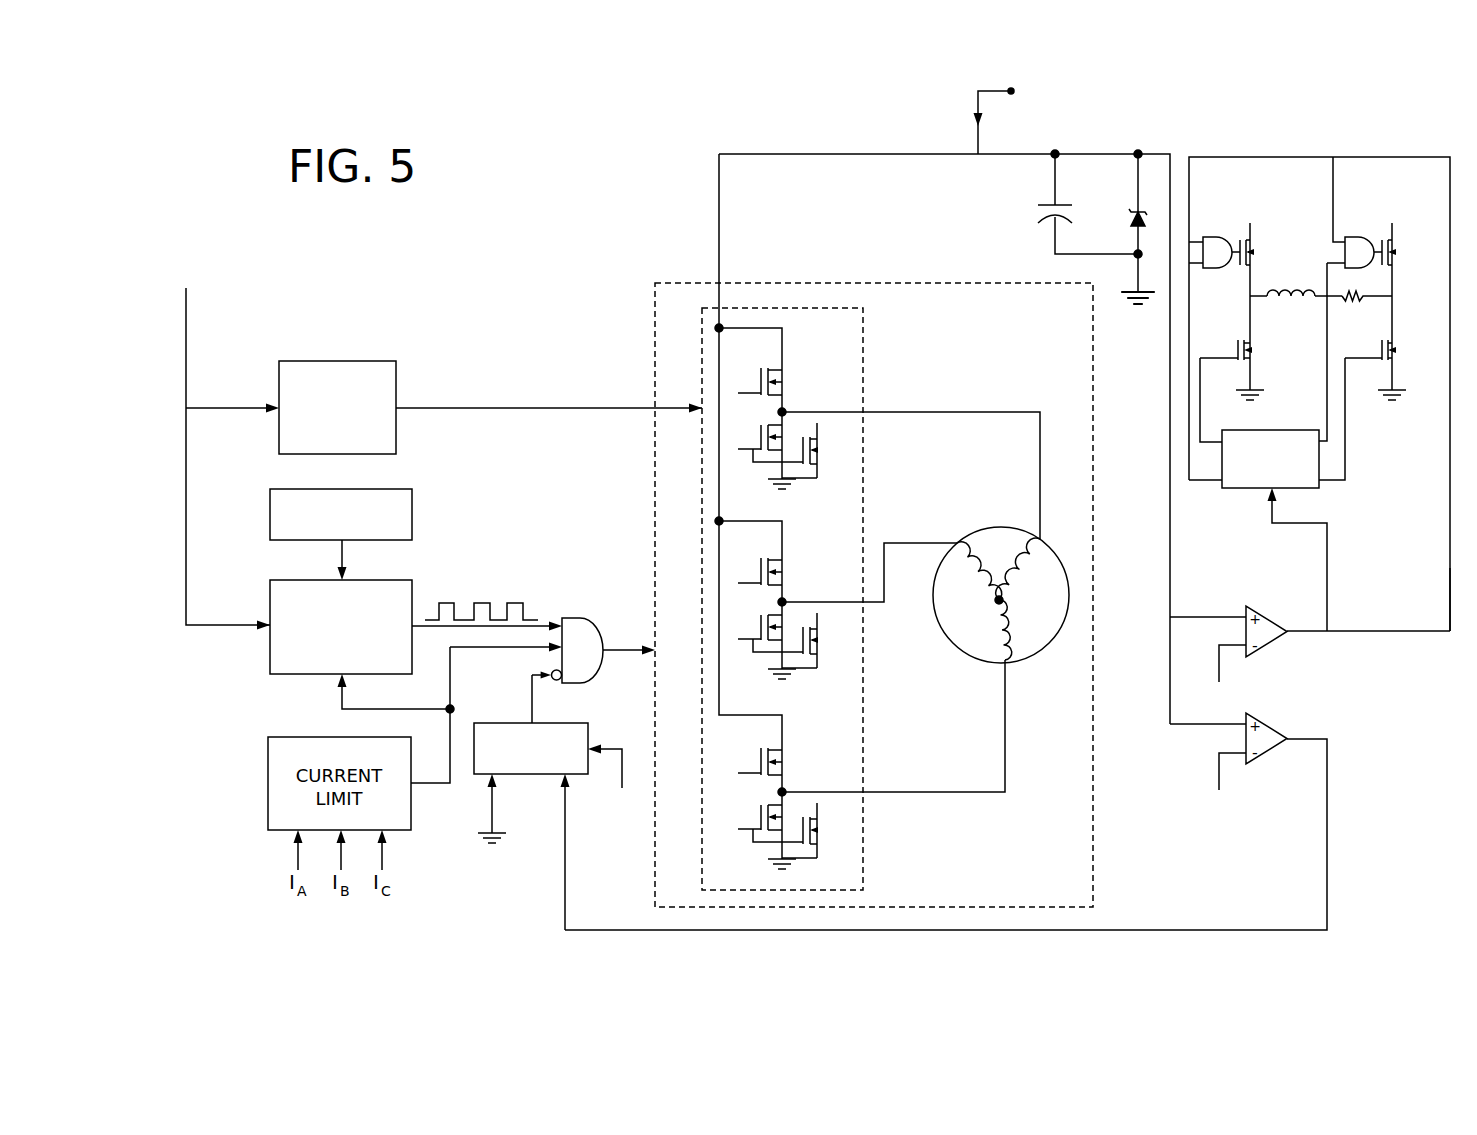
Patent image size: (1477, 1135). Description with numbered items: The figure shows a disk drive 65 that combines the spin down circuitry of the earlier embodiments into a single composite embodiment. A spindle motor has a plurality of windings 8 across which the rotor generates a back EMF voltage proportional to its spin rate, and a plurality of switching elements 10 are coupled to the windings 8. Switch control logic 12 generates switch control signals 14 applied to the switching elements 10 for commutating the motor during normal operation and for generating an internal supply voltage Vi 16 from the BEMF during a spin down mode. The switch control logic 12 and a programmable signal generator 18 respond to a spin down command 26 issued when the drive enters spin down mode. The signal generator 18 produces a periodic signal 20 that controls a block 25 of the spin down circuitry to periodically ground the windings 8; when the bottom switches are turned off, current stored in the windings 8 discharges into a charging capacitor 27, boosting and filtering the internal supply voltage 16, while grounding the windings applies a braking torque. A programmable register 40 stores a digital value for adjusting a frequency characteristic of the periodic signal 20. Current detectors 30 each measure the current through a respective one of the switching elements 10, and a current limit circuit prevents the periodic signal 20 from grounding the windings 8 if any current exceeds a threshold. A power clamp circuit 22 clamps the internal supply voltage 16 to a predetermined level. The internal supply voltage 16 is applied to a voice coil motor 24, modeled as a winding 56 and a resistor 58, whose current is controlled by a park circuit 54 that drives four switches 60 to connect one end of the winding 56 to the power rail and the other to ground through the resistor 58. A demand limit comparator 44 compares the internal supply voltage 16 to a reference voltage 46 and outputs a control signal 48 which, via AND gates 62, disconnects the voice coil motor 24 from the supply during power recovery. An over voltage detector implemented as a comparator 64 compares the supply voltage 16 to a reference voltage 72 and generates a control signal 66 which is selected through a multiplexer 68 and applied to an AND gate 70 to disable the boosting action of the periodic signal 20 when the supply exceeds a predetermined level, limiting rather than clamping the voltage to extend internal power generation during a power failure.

The windings 8 is at (1001, 614).
The switching elements 10 is at (871, 522).
The switch control logic 12 is at (337, 384).
The switch control signals 14 is at (549, 386).
The internal supply voltage Vi 16 is at (982, 403).
The signal generator 18 is at (312, 631).
The periodic signal 20 is at (481, 583).
The power clamp circuit 22 is at (1119, 226).
The voice coil motor 24 is at (1425, 146).
The block of spin down circuitry 25 is at (843, 595).
The spin down command 26 is at (220, 438).
The charging capacitor 27 is at (1024, 221).
The current detectors 30 is at (830, 476).
The programmable register 40 is at (371, 534).
The demand limit circuit 44 is at (1348, 610).
The reference voltage Vref 46 is at (1231, 674).
The control signal 48 is at (1419, 592).
The park circuit 54 is at (1269, 530).
The winding 56 is at (1285, 312).
The resistor 58 is at (1355, 312).
The switches 60 is at (1262, 240).
The AND gates 62 is at (1287, 312).
The over voltage detector 64 is at (1290, 761).
The disk drive 65 is at (550, 289).
The control signal 66 is at (974, 834).
The multiplexer 68 is at (560, 803).
The AND gate 70 is at (497, 676).
The reference voltage 72 is at (1204, 781).